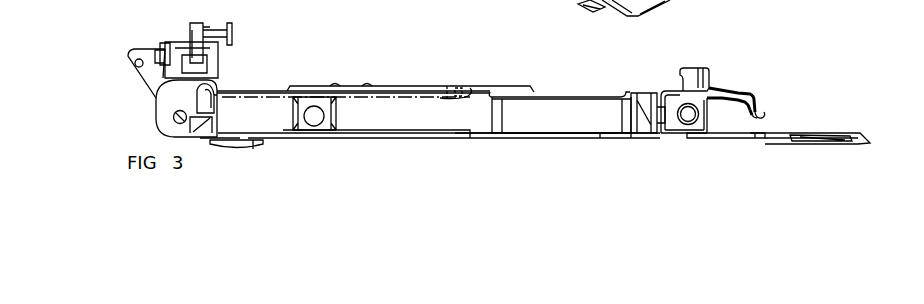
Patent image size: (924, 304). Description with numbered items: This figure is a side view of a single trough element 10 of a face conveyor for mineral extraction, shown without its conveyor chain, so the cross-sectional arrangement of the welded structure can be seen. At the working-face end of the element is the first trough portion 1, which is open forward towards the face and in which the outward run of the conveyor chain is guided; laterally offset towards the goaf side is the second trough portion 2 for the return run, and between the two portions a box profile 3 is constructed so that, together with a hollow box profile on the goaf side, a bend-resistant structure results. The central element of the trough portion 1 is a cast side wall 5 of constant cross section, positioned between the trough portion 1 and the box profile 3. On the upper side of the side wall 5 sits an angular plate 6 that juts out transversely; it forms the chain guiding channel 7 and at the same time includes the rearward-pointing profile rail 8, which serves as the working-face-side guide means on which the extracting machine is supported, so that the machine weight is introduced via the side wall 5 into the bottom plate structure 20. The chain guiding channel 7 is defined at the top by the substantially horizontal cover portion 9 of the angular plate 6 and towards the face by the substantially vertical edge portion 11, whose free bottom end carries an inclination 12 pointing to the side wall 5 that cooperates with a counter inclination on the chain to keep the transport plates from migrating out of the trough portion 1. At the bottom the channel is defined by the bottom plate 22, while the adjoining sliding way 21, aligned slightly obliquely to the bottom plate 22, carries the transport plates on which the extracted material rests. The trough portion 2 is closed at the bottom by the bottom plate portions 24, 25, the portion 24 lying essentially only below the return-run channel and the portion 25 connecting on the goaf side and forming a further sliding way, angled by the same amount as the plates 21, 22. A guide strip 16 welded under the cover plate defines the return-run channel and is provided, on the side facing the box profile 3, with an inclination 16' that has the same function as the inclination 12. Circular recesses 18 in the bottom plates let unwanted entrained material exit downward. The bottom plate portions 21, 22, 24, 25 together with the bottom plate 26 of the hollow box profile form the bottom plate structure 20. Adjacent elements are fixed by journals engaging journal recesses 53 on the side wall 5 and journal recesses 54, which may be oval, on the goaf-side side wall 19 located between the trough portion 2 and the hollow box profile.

The first trough portion 1 is at (813, 123).
The second trough portion 2 is at (400, 120).
The box profile 3 is at (560, 127).
The side wall 5 is at (680, 127).
The angular plate 6 is at (720, 70).
The chain guiding channel 7 is at (733, 123).
The profile rail 8 is at (690, 68).
The cover portion 9 is at (722, 90).
The trough element 10 is at (413, 56).
The edge portion 11 is at (753, 96).
The inclination 12 is at (764, 114).
The guide strip 16 is at (449, 74).
The inclination 16' is at (463, 75).
The circular recess 18 is at (497, 0).
The goaf-side side wall 19 is at (300, 131).
The bottom plate structure 20 is at (568, 142).
The sliding way 21 is at (786, 141).
The bottom plate 22 is at (742, 139).
The bottom plate portion 24 is at (478, 139).
The bottom plate portion 25 is at (375, 138).
The bottom plate 26 is at (254, 143).
The journal recess 53 is at (690, 117).
The journal recess 54 is at (315, 119).